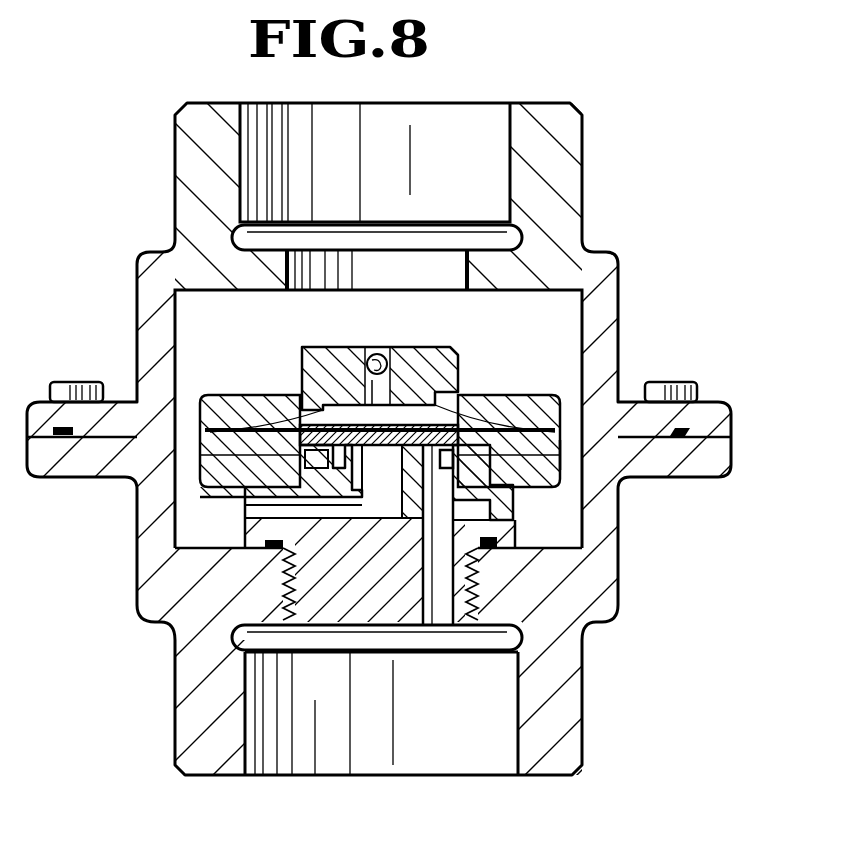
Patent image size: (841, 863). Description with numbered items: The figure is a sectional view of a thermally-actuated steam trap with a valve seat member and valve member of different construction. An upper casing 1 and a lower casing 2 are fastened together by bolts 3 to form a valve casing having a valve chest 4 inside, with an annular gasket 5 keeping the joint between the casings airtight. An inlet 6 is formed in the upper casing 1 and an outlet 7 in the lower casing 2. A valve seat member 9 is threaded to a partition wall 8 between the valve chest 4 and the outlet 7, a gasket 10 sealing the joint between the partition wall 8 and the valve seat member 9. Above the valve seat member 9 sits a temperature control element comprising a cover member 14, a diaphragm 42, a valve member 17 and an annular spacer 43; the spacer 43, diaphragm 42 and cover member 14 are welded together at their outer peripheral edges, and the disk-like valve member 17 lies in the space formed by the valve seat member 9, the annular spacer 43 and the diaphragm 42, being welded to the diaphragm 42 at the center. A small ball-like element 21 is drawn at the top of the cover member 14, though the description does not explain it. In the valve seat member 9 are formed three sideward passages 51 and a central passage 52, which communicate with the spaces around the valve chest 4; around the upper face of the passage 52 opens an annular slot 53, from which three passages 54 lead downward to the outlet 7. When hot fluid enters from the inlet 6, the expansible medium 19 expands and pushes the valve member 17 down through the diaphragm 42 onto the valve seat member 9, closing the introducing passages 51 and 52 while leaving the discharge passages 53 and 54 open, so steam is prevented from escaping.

The upper casing 1 is at (568, 147).
The lower casing 2 is at (568, 728).
The bolts 3 is at (80, 382).
The valve chest 4 is at (533, 300).
The annular gasket 5 is at (690, 432).
The inlet 6 is at (462, 127).
The outlet 7 is at (428, 745).
The partition wall 8 is at (228, 585).
The valve seat member 9 is at (562, 452).
The gasket 10 is at (270, 550).
The cover member 14 is at (305, 348).
The valve member 17 is at (452, 430).
The expansible medium 19 is at (292, 402).
The ball 21 is at (378, 352).
The diaphragm 42 is at (260, 402).
The annular spacer 43 is at (518, 402).
The sideward passages 51 is at (262, 506).
The central passage 52 is at (385, 490).
The annular slot 53 is at (503, 505).
The passages 54 is at (441, 587).